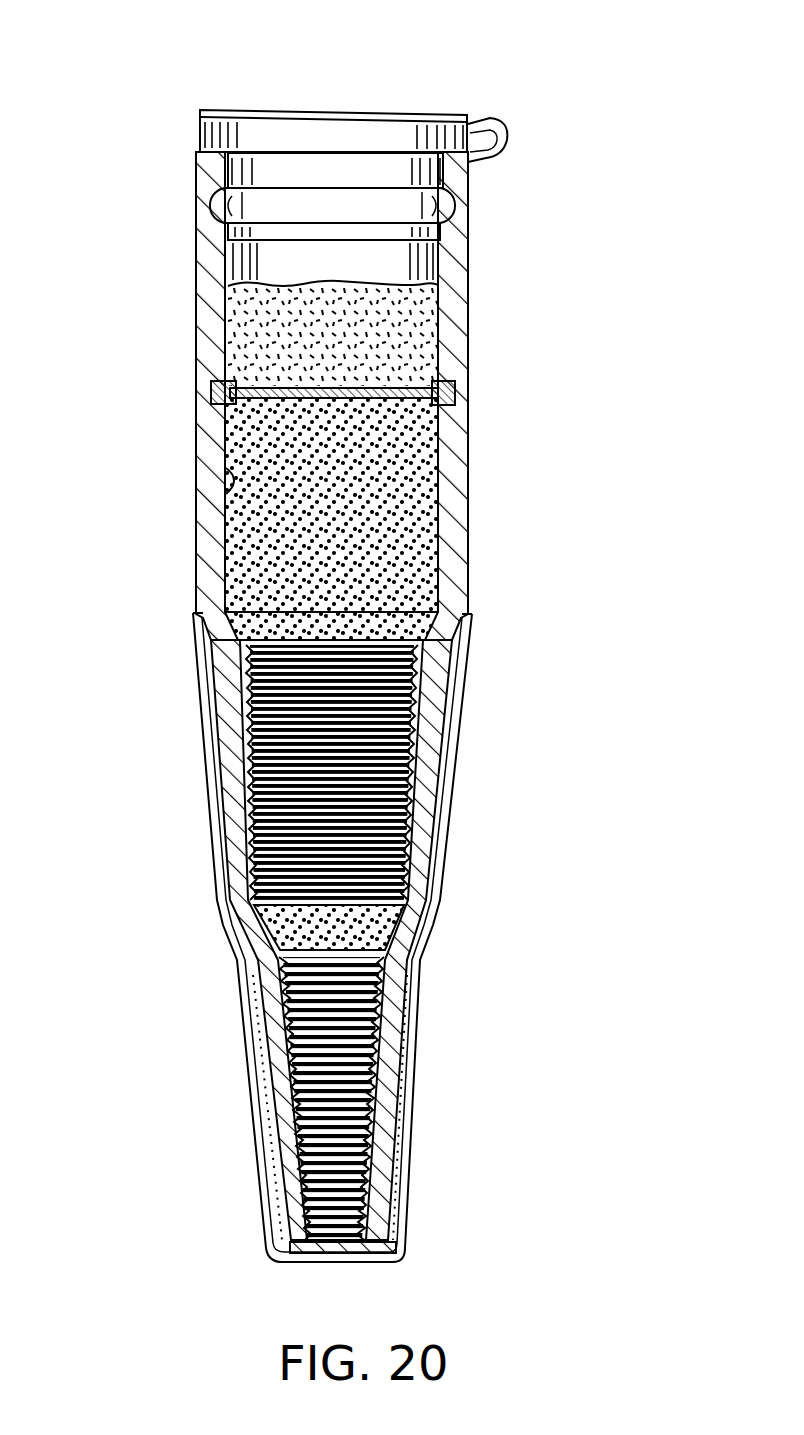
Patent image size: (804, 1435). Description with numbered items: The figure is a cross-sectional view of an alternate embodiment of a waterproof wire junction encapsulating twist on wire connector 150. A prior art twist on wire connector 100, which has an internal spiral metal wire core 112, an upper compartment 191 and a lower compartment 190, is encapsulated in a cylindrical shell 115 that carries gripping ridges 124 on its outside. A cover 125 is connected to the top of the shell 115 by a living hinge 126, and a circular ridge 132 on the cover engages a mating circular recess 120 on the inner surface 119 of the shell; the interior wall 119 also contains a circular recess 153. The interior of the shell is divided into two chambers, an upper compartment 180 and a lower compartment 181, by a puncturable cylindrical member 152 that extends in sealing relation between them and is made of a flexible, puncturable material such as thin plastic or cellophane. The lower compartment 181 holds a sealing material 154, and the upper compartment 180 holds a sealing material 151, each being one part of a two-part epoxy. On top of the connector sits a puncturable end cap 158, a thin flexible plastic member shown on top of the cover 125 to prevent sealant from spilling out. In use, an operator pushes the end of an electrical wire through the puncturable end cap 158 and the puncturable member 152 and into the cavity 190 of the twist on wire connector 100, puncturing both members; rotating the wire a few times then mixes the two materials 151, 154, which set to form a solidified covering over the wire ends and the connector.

The cover 125 is at (238, 108).
The puncturable end cap 158 is at (343, 112).
The living hinge 126 is at (497, 118).
The circular ridge 132 is at (230, 187).
The circular recess 120 is at (222, 222).
The upper compartment 180 is at (358, 272).
The sealing material 151 is at (427, 328).
The puncturable cylindrical member 152 is at (265, 382).
The circular recess 153 is at (445, 393).
The cylindrical shell 115 is at (462, 437).
The inner surface 119 is at (228, 488).
The wire junction encapsulating twist on wire connector 150 is at (468, 517).
The lower compartment 181 is at (352, 517).
The twist on wire connector 100 is at (265, 632).
The sealing material 154 is at (425, 572).
The gripping ridges 124 is at (208, 760).
The upper compartment 191 is at (410, 745).
The internal spiral metal wire core 112 is at (372, 1000).
The lower compartment 190 is at (375, 1033).